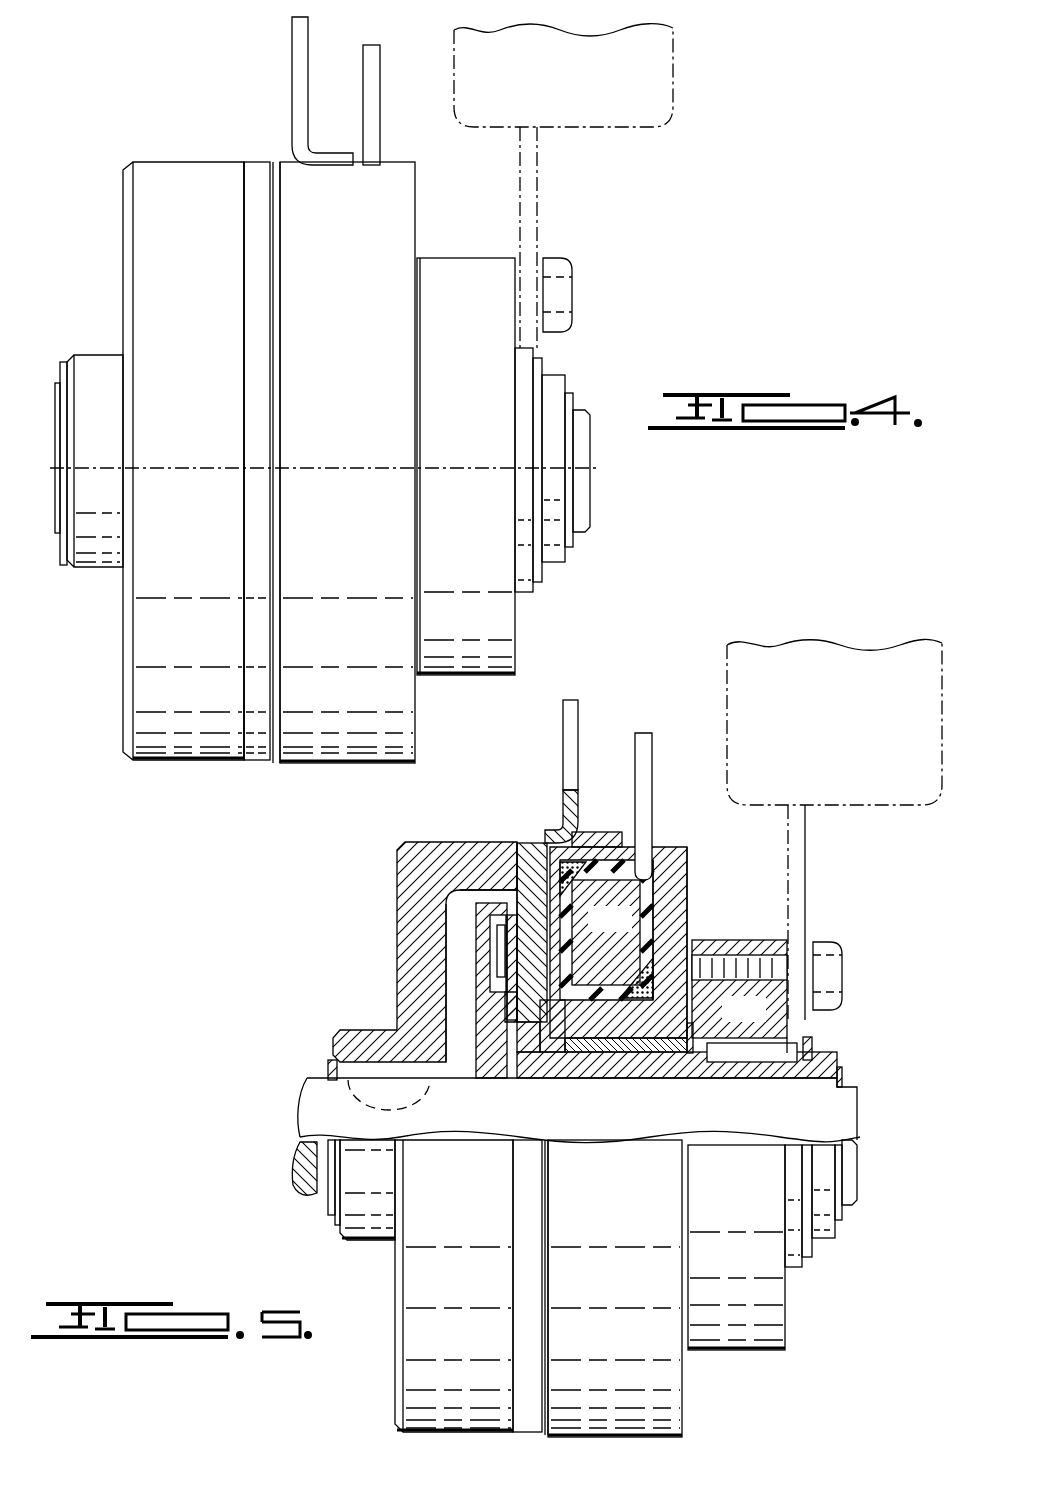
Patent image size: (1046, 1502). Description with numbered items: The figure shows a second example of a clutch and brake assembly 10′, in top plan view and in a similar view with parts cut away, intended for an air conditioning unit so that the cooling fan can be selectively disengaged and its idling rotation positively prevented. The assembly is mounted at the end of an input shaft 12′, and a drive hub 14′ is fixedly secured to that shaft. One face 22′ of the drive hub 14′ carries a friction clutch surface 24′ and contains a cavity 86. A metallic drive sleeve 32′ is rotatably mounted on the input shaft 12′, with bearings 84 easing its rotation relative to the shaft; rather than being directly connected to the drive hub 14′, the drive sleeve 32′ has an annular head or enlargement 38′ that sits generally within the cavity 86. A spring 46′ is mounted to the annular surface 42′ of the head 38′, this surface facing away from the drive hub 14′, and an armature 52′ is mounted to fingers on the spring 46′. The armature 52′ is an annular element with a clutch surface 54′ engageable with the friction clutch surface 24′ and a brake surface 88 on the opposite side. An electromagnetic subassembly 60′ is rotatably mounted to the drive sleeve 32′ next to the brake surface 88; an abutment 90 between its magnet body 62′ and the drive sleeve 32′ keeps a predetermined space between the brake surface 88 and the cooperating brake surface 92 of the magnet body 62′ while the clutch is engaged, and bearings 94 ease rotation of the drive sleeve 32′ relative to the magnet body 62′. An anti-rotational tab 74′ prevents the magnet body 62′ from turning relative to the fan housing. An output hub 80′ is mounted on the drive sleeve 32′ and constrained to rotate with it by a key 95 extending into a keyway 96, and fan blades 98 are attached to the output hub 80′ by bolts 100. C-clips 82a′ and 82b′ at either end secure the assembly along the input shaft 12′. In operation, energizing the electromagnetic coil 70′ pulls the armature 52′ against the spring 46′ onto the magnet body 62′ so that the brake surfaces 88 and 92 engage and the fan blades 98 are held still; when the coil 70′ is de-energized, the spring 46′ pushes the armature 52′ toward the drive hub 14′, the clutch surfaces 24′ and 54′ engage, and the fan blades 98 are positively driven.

In FIG. 4, the clutch and brake assembly 10′ is at (578, 573).
In FIG. 5, the clutch and brake assembly 10′ is at (361, 872).
In FIG. 4, the input shaft 12′ is at (580, 480).
In FIG. 5, the input shaft 12′ is at (310, 1080).
In FIG. 4, the drive hub 14′ is at (90, 355).
In FIG. 5, the drive hub 14′ is at (412, 953).
In FIG. 5, the face 22′ is at (455, 927).
In FIG. 4, the friction clutch surface 24′ is at (246, 237).
In FIG. 5, the friction clutch surface 24′ is at (527, 843).
In FIG. 5, the drive sleeve 32′ is at (530, 1060).
In FIG. 5, the annular head or enlargement 38′ is at (450, 1063).
In FIG. 5, the annular surface 42′ is at (513, 897).
In FIG. 5, the spring 46′ is at (503, 1000).
In FIG. 4, the armature 52′ is at (253, 575).
In FIG. 5, the armature 52′ is at (540, 1003).
In FIG. 4, the clutch surface 54′ is at (244, 200).
In FIG. 5, the clutch surface 54′ is at (513, 847).
In FIG. 5, the electromagnetic subassembly 60′ is at (692, 874).
In FIG. 4, the magnet body 62′ is at (366, 578).
In FIG. 5, the magnet body 62′ is at (683, 903).
In FIG. 5, the electromagnetic coil 70′ is at (628, 931).
In FIG. 4, the anti-rotational tab 74′ is at (292, 95).
In FIG. 5, the anti-rotational tab 74′ is at (563, 745).
In FIG. 4, the output hub 80′ is at (492, 463).
In FIG. 5, the output hub 80′ is at (764, 1020).
In FIG. 4, the C-clip 82a′ is at (57, 533).
In FIG. 5, the C-clip 82a′ is at (328, 1060).
In FIG. 4, the C-clip 82b′ is at (577, 398).
In FIG. 5, the C-clip 82b′ is at (843, 1073).
In FIG. 5, the bearings 84 is at (673, 1080).
In FIG. 5, the cavity 86 is at (470, 978).
In FIG. 4, the brake surface 88 is at (281, 197).
In FIG. 5, the brake surface 88 is at (578, 833).
In FIG. 5, the abutment 90 is at (580, 1050).
In FIG. 4, the brake surface 92 is at (277, 342).
In FIG. 5, the brake surface 92 is at (577, 807).
In FIG. 5, the bearings 94 is at (637, 1052).
In FIG. 5, the key 95 is at (750, 1057).
In FIG. 5, the keyway 96 is at (785, 1057).
In FIG. 4, the fan blades 98 is at (630, 83).
In FIG. 5, the fan blades 98 is at (767, 687).
In FIG. 4, the bolts 100 is at (570, 290).
In FIG. 5, the bolts 100 is at (818, 955).